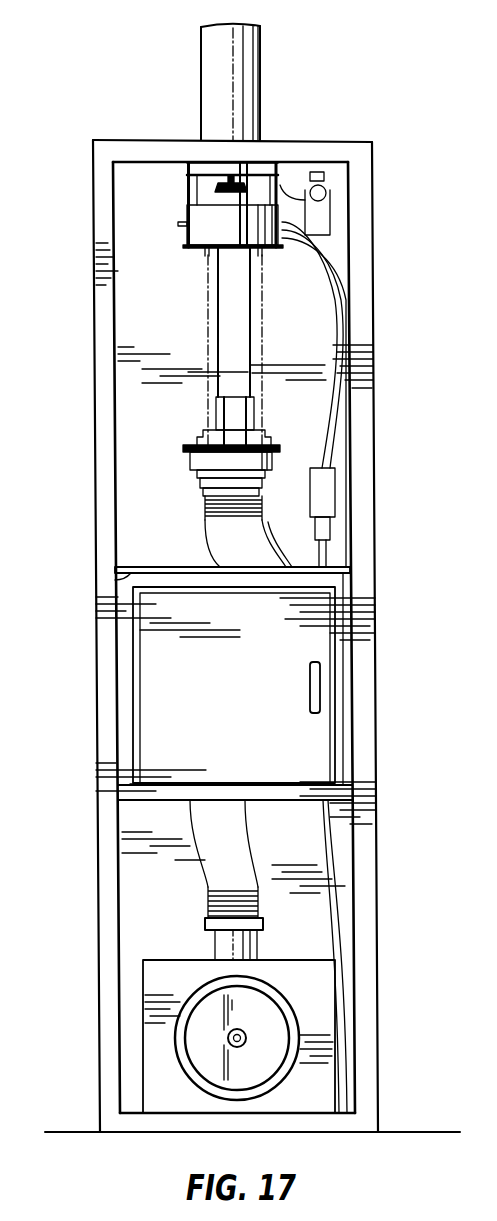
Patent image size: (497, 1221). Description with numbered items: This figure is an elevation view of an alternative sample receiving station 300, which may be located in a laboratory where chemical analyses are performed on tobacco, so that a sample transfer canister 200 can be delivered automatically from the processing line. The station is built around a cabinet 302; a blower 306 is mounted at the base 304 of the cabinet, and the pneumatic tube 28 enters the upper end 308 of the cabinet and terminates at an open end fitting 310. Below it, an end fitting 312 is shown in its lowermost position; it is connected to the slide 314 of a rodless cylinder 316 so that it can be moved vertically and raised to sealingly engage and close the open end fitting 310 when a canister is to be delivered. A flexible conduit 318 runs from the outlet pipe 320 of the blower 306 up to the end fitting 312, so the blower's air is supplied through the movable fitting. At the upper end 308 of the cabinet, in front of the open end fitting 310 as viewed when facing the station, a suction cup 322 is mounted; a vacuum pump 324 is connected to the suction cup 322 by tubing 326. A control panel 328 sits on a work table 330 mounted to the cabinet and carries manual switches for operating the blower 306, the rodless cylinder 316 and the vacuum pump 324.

The pneumatic tube 28 is at (262, 70).
The sample transfer canister 200 is at (265, 347).
The receiving station 300 is at (281, 636).
The cabinet 302 is at (363, 532).
The base 304 is at (348, 1122).
The blower 306 is at (295, 980).
The upper end 308 is at (343, 147).
The open end fitting 310 is at (205, 253).
The end fitting 312 is at (203, 462).
The slide 314 is at (254, 414).
The rodless cylinder 316 is at (237, 318).
The flexible conduit 318 is at (240, 855).
The outlet pipe 320 is at (225, 942).
The suction cup 322 is at (230, 209).
The vacuum pump 324 is at (328, 214).
The tubing 326 is at (253, 167).
The control panel 328 is at (180, 562).
The work table 330 is at (115, 576).